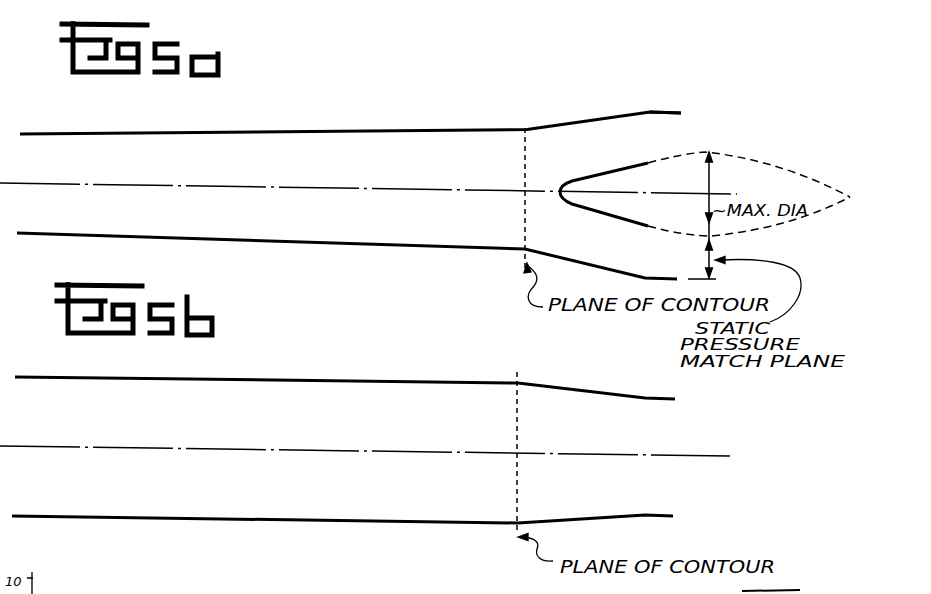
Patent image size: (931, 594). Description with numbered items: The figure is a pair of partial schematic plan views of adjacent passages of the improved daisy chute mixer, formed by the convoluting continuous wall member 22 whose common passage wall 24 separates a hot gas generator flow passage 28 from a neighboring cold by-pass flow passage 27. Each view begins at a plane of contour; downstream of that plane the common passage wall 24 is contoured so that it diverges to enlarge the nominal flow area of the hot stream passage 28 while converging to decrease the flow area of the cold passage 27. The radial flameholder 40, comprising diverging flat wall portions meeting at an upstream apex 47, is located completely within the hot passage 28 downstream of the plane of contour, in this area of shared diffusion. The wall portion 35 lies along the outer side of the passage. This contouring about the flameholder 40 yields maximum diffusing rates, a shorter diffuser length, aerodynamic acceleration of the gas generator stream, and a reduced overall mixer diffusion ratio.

In FIG. 5A, the convoluting continuous wall member 22 is at (470, 107).
In FIG. 5A, the outer cowl surface 35 is at (681, 113).
In FIG. 5A, the common passage wall 24 is at (447, 250).
In FIG. 5B, the common passage wall 24 is at (463, 382).
In FIG. 5A, the hot gas generator flow passage 28 is at (490, 179).
In FIG. 5A, the upstream apex 47 is at (562, 186).
In FIG. 5A, the radial flameholder 40 is at (586, 219).
In FIG. 5B, the cold by-pass flow passage 27 is at (497, 440).